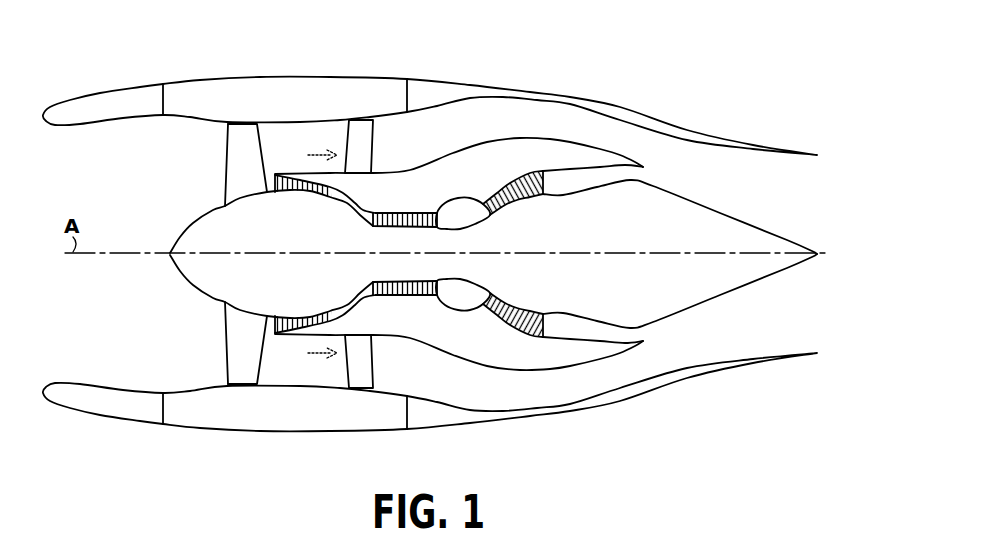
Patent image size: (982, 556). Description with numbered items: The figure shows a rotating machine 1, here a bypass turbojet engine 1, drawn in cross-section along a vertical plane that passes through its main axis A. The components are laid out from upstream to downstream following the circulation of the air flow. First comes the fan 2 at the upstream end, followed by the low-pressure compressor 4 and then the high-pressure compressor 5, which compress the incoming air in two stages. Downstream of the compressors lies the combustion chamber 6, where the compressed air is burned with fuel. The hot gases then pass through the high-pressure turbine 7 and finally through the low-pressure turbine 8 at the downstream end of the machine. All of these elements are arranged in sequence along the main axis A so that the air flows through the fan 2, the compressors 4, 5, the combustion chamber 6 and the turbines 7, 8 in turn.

The rotating machine 1 is at (632, 60).
The fan 2 is at (232, 340).
The low-pressure compressor 4 is at (296, 337).
The high-pressure compressor 5 is at (407, 307).
The combustion chamber 6 is at (457, 298).
The high-pressure turbine 7 is at (497, 325).
The low-pressure turbine 8 is at (532, 343).